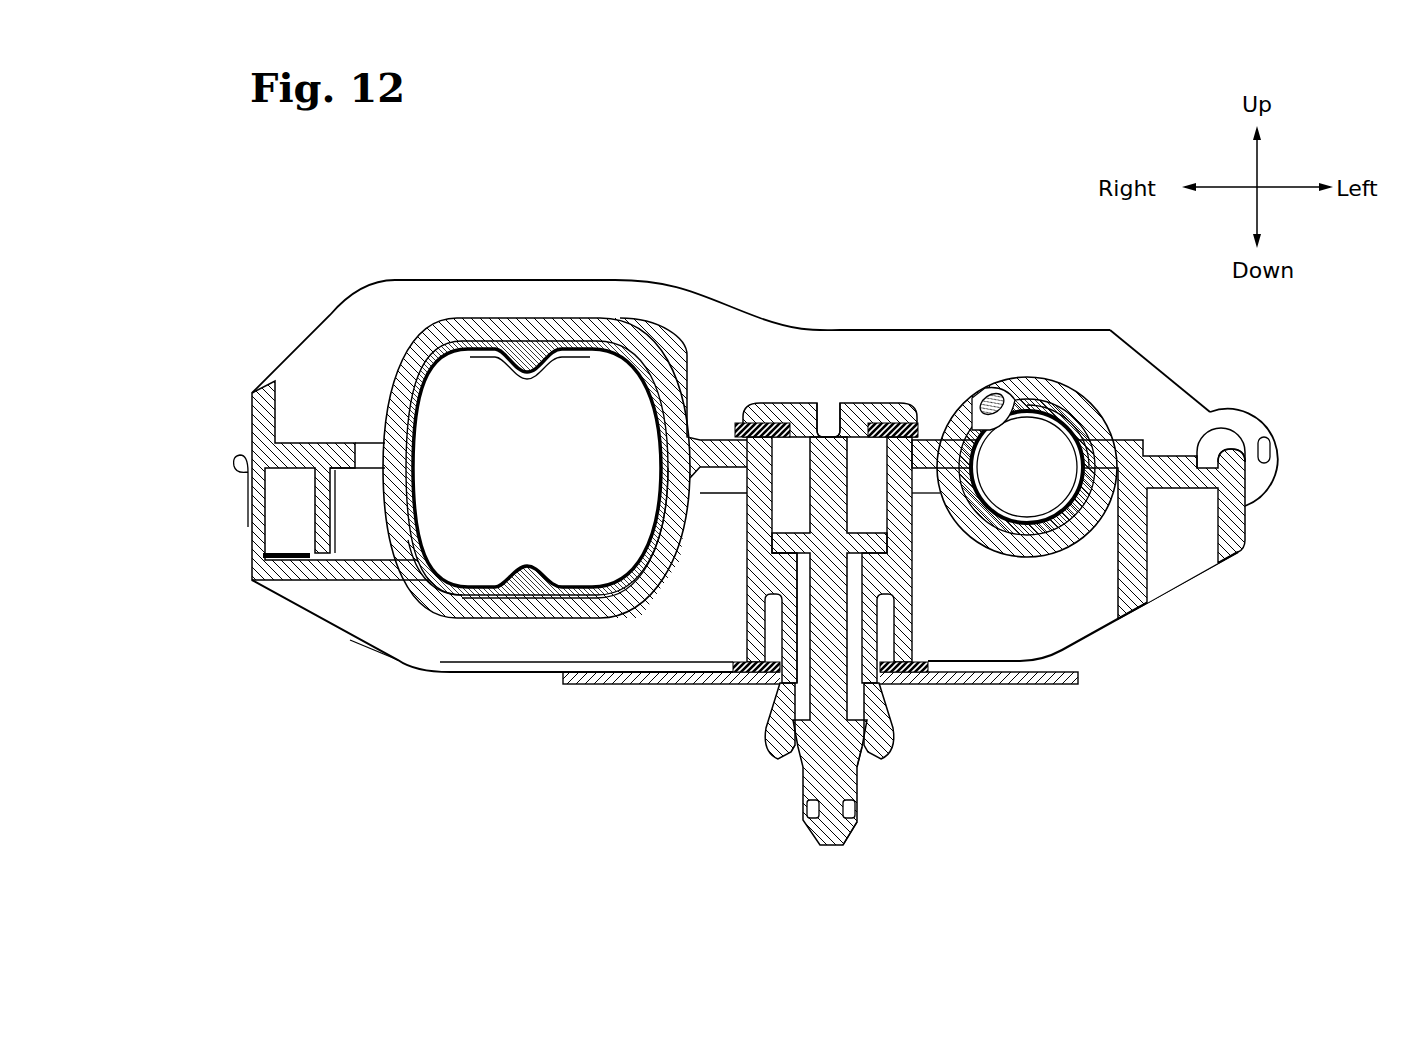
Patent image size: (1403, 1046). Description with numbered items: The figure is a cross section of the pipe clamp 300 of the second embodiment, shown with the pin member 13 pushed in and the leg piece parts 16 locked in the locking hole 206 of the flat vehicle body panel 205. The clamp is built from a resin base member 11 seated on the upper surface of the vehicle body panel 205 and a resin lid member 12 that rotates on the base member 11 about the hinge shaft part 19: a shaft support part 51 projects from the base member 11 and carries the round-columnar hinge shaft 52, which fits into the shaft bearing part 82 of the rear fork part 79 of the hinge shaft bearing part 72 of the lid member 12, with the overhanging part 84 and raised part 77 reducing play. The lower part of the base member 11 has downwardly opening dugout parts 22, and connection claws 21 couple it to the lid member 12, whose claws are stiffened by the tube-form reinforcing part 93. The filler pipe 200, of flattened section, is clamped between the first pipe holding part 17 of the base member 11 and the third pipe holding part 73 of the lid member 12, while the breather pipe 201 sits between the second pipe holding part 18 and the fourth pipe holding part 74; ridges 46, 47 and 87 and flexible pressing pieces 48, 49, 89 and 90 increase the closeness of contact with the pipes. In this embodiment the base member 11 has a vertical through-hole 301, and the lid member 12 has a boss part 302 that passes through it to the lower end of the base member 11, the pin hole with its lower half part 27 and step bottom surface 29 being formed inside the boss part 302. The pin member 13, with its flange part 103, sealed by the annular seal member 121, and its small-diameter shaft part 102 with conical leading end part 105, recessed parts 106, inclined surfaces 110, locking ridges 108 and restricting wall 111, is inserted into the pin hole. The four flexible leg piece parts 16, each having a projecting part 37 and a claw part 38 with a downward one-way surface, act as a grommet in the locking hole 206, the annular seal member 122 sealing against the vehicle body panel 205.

The pipe clamp 300 is at (326, 240).
The lid member 12 is at (300, 342).
The base member 11 is at (307, 626).
The dugout part 22 is at (365, 640).
The connection claw 21 is at (243, 458).
The reinforcing part 93 is at (255, 528).
The ridge 87 is at (462, 318).
The pressing piece 89 is at (397, 348).
The third pipe holding part 73 is at (525, 352).
The filler pipe 200 is at (590, 584).
The first pipe holding part 17 is at (453, 588).
The ridge 47 is at (515, 597).
The pressing piece 48 is at (641, 578).
The pin member 13 is at (794, 393).
The flange part 103 is at (866, 416).
The seal member 121 is at (902, 420).
The projecting part 37 is at (800, 703).
The small-diameter shaft part 102 is at (910, 605).
The bottom surface 29 is at (781, 556).
The lower half part 27 is at (803, 614).
The through-hole 301 is at (712, 480).
The boss part 302 is at (913, 552).
The leading end part 105 is at (831, 847).
The recessed part 106 is at (806, 806).
The claw part 38 is at (849, 828).
The inclined surface 110 is at (861, 772).
The leg piece part 16 is at (766, 746).
The restricting wall 111 is at (872, 752).
The locking ridge 108 is at (795, 756).
The locking hole 206 is at (886, 674).
The vehicle body panel 205 is at (1075, 686).
The seal member 122 is at (923, 685).
The hinge shaft part 19 is at (1237, 553).
The rear fork part 79 is at (1168, 440).
The shaft support part 51 is at (1183, 482).
The hinge shaft bearing part 72 is at (1284, 422).
The shaft bearing part 82 is at (1242, 425).
The overhanging part 84 is at (1196, 440).
The hinge shaft 52 is at (1229, 448).
The raised part 77 is at (1272, 450).
The fourth pipe holding part 74 is at (1032, 420).
The ridge 46 is at (1010, 554).
The pressing piece 49 is at (1046, 555).
The breather pipe 201 is at (1018, 518).
The second pipe holding part 18 is at (1068, 496).
The pressing piece 90 is at (992, 394).